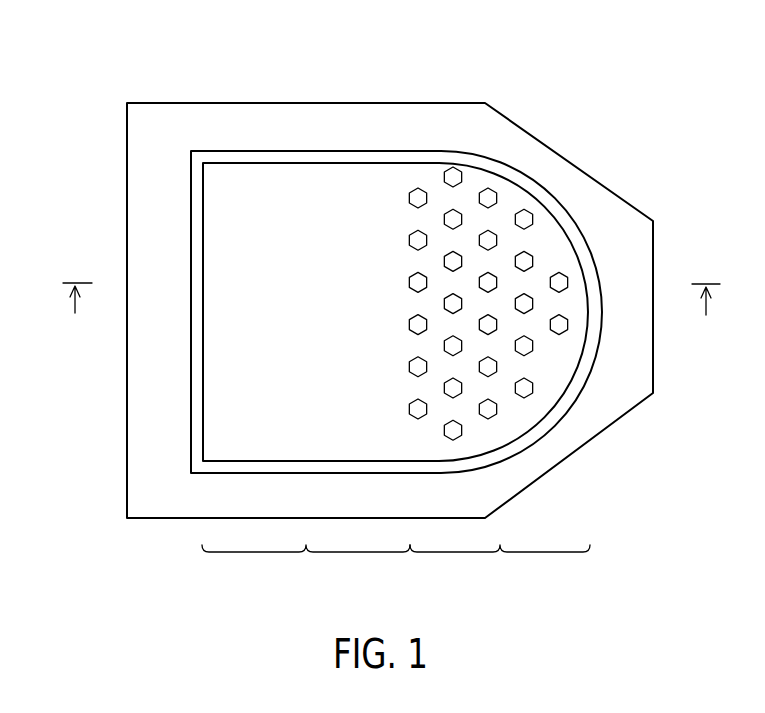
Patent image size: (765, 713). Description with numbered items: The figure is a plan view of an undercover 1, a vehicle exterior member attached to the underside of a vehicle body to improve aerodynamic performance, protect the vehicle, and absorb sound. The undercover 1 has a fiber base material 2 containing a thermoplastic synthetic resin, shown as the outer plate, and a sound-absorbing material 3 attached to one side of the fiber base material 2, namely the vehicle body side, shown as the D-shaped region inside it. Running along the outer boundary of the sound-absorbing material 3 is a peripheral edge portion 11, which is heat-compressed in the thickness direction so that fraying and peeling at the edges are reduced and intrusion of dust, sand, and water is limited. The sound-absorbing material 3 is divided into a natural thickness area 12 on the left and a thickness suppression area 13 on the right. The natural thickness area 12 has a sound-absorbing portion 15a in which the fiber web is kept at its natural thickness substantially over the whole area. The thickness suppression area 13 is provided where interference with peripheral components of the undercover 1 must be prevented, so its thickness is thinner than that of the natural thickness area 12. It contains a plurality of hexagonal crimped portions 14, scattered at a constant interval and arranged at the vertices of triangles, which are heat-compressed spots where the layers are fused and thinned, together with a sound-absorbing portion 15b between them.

The undercover 1 is at (144, 58).
The fiber base material 2 is at (227, 127).
The sound-absorbing material 3 is at (302, 183).
The peripheral edge portion 11 is at (359, 155).
The natural thickness area 12 is at (306, 568).
The thickness suppression area 13 is at (500, 568).
The crimped portion 14 is at (418, 188).
The sound-absorbing portion 15a is at (233, 407).
The sound-absorbing portion 15b is at (550, 260).